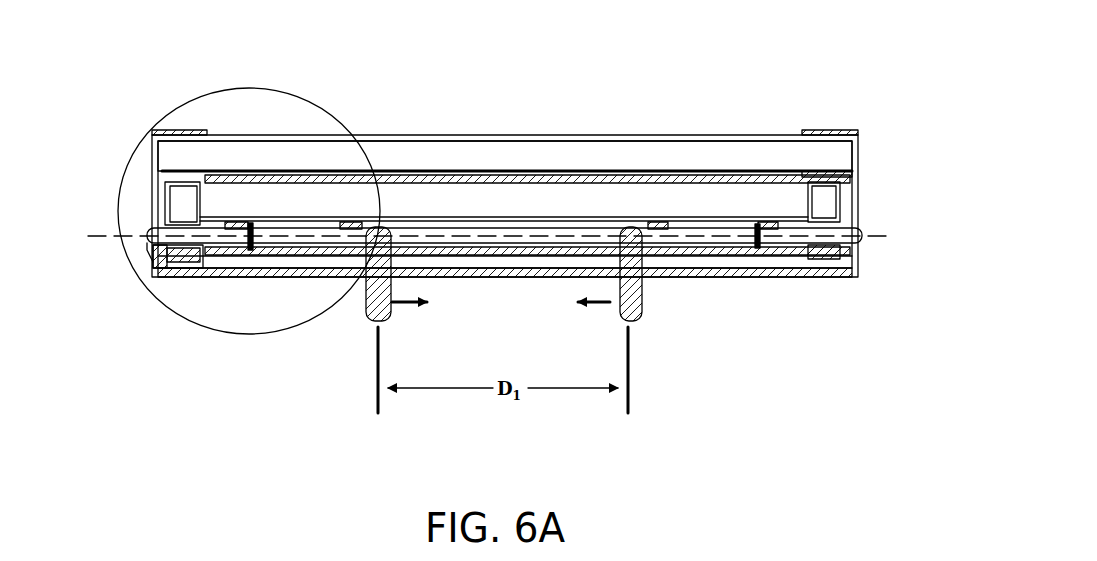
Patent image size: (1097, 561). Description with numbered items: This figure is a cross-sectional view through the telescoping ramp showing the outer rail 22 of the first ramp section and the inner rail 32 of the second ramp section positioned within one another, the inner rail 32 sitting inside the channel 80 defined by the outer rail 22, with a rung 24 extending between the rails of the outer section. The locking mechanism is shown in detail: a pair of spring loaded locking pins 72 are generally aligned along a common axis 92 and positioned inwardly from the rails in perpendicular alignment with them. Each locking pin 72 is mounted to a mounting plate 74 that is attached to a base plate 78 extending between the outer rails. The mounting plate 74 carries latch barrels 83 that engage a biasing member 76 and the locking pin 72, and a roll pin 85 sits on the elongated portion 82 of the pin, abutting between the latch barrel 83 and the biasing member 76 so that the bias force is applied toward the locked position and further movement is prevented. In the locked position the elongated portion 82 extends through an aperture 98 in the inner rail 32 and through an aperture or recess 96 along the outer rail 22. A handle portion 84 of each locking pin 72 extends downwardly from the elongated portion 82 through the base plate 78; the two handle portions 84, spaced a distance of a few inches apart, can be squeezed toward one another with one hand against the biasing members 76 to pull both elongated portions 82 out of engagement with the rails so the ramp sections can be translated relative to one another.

The rail 22 is at (178, 133).
The rung 24 is at (265, 150).
The biasing member 76 is at (300, 223).
The locking pin 72 is at (365, 225).
The base plate 78 is at (462, 263).
The elongated portion 82 is at (800, 233).
The channel 80 is at (197, 172).
The rail 32 is at (182, 207).
The aperture or recess 96 is at (155, 243).
The aperture 98 is at (158, 262).
The latch barrel 83 is at (231, 228).
The roll pin 85 is at (252, 225).
The mounting plate 74 is at (268, 243).
The handle portion 84 is at (388, 302).
The common axis 92 is at (880, 240).